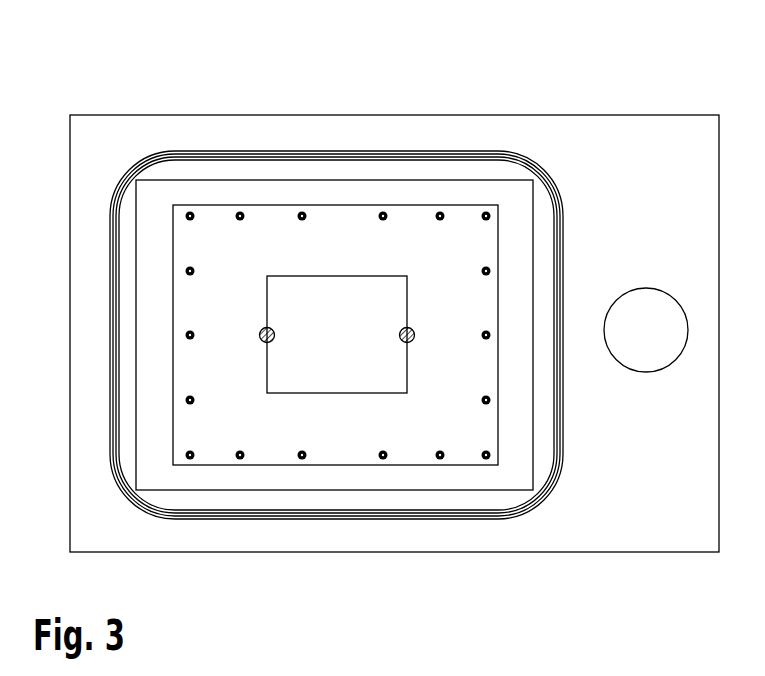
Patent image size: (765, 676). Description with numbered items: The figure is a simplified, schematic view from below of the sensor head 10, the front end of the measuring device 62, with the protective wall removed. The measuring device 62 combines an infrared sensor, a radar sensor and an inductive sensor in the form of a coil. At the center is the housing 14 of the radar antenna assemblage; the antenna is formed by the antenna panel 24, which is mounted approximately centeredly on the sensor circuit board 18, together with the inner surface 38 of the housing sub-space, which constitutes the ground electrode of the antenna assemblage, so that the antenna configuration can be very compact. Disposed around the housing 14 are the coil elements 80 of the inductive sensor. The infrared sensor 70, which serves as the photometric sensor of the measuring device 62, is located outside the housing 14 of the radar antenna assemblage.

The measuring device 62 is at (108, 146).
The sensor head 10 is at (105, 303).
The coil elements 80 is at (242, 520).
The housing 14 is at (259, 168).
The inner surface 38 is at (506, 188).
The circuit board 18 is at (322, 440).
The antenna panel 24 is at (365, 375).
The infrared sensor 70 is at (648, 372).